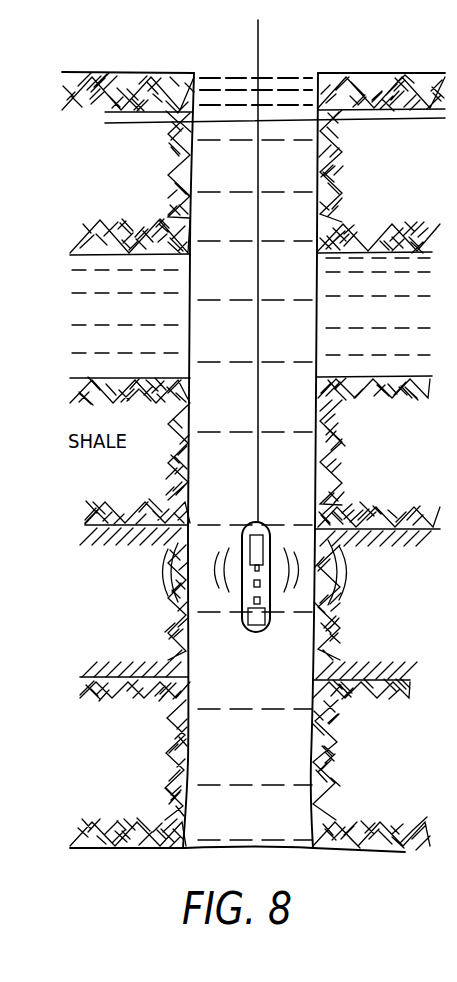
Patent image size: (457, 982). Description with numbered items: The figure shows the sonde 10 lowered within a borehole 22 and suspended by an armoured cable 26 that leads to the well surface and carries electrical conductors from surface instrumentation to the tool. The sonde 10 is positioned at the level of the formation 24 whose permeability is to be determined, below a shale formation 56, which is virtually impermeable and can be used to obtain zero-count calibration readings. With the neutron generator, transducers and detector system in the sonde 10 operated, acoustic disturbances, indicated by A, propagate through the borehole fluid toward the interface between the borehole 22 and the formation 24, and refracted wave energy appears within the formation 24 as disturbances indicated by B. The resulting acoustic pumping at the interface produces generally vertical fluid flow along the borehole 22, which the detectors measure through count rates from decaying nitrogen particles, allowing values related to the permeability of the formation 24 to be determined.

The borehole 22 is at (197, 86).
The armoured cable 26 is at (258, 58).
The sonde 10 is at (270, 548).
The shale formation 56 is at (389, 457).
The formation 24 is at (405, 608).
The acoustic disturbances A is at (298, 578).
The refracted wave energy disturbances B is at (349, 568).